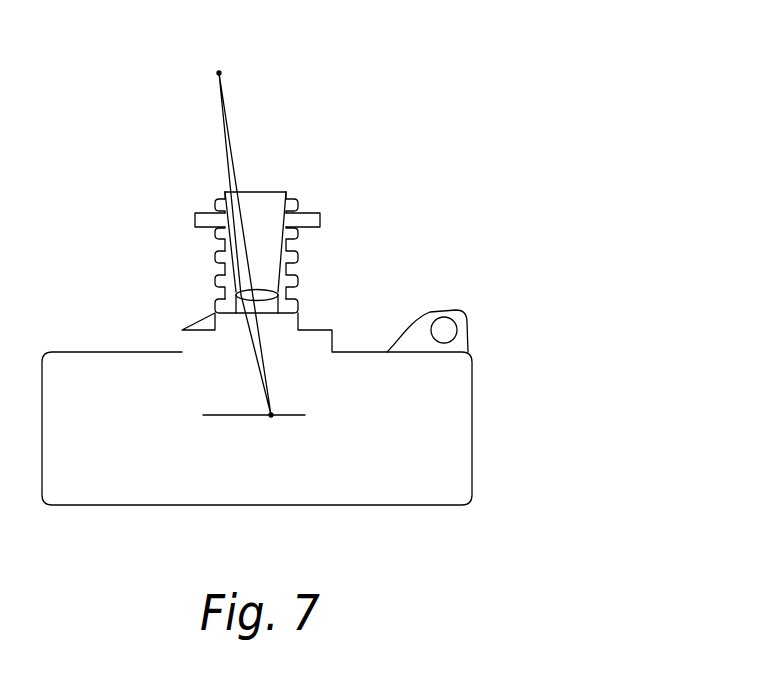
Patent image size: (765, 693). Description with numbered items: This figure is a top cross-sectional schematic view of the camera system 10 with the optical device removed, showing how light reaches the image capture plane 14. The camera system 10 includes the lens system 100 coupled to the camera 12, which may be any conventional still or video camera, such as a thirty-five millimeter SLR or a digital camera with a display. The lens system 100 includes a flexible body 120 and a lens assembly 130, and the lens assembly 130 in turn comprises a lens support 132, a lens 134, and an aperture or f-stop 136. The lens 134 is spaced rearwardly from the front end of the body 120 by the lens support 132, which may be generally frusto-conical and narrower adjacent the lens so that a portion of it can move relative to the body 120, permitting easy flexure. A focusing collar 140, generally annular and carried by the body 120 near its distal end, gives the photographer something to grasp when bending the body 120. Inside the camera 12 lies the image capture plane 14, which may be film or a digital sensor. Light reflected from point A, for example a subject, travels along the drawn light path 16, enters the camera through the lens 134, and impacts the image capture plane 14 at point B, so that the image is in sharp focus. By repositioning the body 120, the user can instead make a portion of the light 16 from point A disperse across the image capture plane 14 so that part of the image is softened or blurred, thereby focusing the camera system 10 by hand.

The camera system 10 is at (335, 383).
The camera 12 is at (481, 419).
The image capture plane 14 is at (305, 415).
The light beam 16 is at (271, 306).
The lens system 100 is at (245, 350).
The flexible body 120 is at (245, 375).
The lens assembly 130 is at (226, 282).
The lens support 132 is at (229, 255).
The lens 134 is at (279, 288).
The aperture or f-stop 136 is at (240, 320).
The focusing collar 140 is at (195, 212).
The point A is at (218, 73).
The point B is at (271, 415).